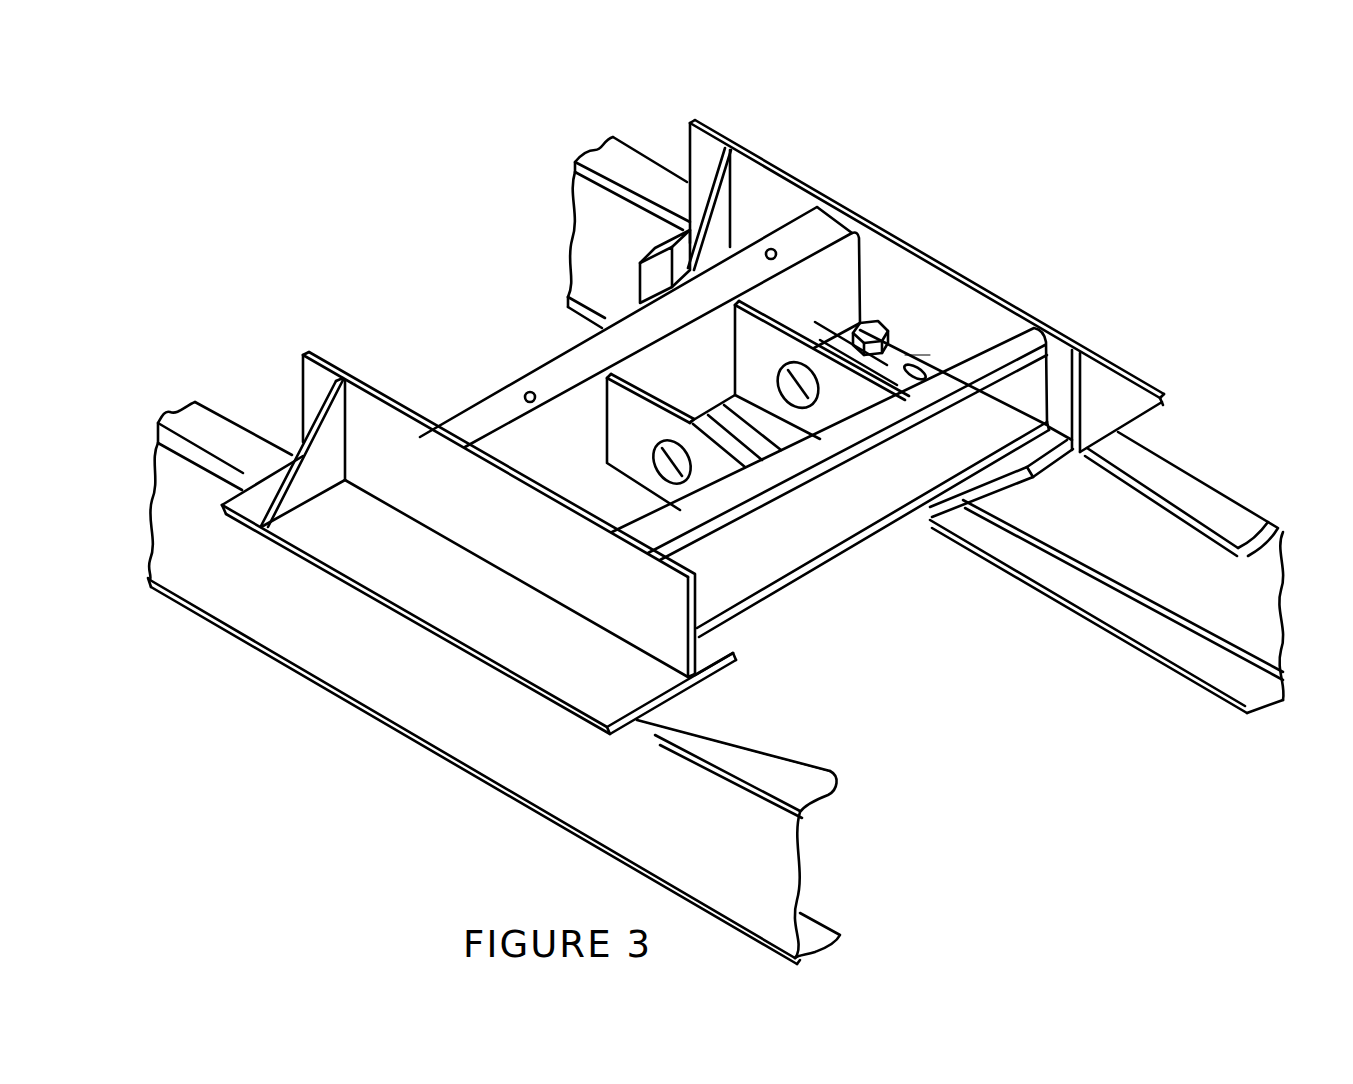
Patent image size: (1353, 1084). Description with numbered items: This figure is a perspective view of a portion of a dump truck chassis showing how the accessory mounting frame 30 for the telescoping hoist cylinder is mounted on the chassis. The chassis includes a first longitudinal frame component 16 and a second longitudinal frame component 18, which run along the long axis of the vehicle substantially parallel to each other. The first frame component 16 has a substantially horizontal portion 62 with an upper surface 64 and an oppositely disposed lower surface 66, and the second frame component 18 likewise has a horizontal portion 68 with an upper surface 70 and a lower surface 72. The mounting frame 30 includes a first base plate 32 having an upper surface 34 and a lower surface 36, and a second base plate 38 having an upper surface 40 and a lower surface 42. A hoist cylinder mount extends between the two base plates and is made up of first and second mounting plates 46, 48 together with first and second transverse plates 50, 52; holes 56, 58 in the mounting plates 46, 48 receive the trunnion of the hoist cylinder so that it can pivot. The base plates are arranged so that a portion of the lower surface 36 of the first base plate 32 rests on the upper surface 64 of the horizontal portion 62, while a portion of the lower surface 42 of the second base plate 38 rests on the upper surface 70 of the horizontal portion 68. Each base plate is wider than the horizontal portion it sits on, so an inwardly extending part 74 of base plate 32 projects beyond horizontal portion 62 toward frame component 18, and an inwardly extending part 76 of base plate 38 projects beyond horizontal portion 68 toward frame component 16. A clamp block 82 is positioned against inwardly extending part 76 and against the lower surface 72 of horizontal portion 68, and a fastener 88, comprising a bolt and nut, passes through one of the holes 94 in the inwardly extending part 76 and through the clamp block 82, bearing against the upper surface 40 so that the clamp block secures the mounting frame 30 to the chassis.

The first longitudinal frame component 16 is at (330, 654).
The second longitudinal frame component 18 is at (1200, 468).
The accessory mounting frame 30 is at (818, 192).
The first base plate 32 is at (325, 566).
The upper surface 34 is at (560, 660).
The lower surface 36 is at (618, 736).
The second base plate 38 is at (1142, 372).
The upper surface 40 is at (900, 358).
The lower surface 42 is at (1166, 404).
The first mounting plate 46 is at (652, 395).
The second mounting plate 48 is at (762, 320).
The first transverse plate 50 is at (487, 408).
The second transverse plate 52 is at (1010, 352).
The hole 56 is at (668, 458).
The hole 58 is at (873, 322).
The horizontal portion 62 is at (792, 745).
The upper surface 64 is at (815, 767).
The lower surface 66 is at (832, 795).
The horizontal portion 68 is at (1183, 528).
The upper surface 70 is at (1233, 530).
The lower surface 72 is at (1248, 556).
The inwardly extending part 74 is at (712, 650).
The inwardly extending part 76 is at (1030, 479).
The clamp block 82 is at (632, 278).
The fastener 88 is at (921, 356).
The holes 94 is at (920, 366).